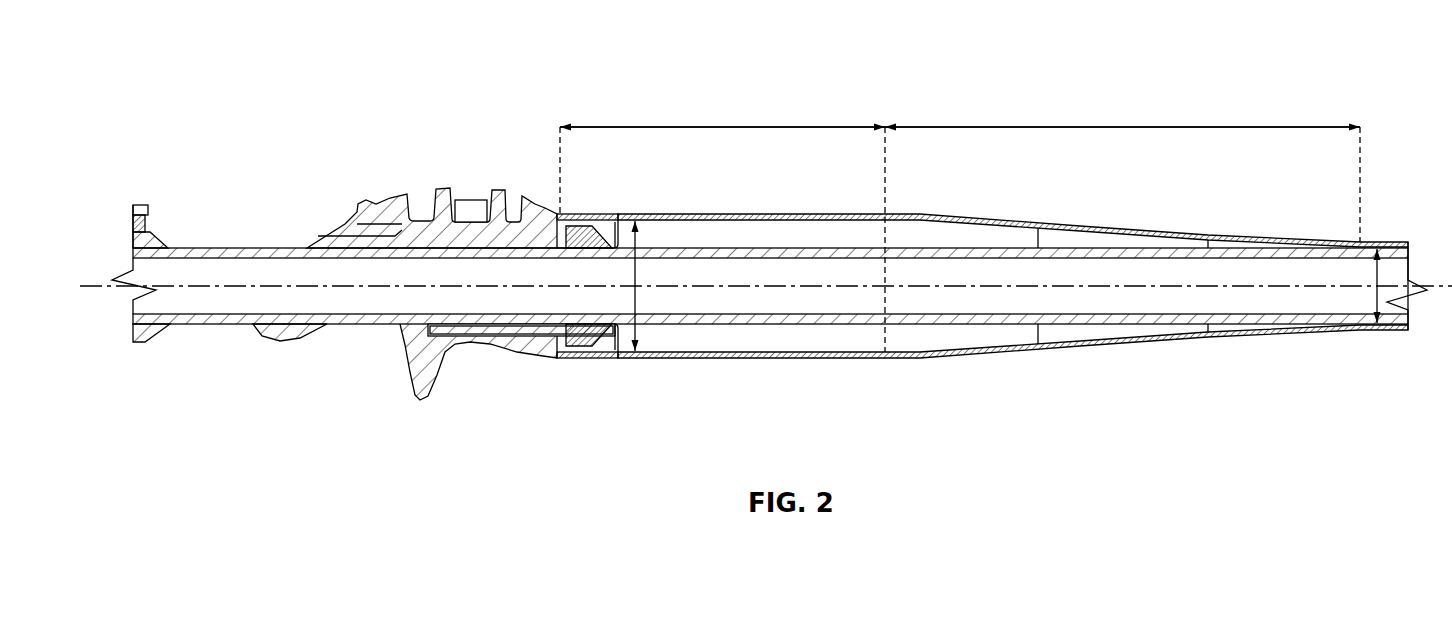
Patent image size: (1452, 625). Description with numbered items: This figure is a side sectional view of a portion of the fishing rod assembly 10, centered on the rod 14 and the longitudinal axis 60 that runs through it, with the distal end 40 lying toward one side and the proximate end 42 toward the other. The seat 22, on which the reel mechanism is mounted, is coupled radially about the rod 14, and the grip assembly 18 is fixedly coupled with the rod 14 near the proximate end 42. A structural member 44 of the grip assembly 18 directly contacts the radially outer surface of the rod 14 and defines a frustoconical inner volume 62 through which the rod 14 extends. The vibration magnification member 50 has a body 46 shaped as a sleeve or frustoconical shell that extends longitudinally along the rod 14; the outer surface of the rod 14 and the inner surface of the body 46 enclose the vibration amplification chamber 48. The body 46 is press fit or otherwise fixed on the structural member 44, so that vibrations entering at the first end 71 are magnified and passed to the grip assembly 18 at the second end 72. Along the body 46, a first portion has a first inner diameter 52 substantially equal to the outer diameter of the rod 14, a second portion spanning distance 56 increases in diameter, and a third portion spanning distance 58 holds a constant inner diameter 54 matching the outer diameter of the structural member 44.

The fishing rod assembly 10 is at (915, 40).
The rod 14 is at (368, 324).
The grip assembly 18 is at (404, 150).
The seat 22 is at (158, 233).
The distal end 40 is at (105, 343).
The proximate end 42 is at (1432, 329).
The structural member 44 is at (590, 342).
The body 46 is at (753, 358).
The vibration amplification chamber 48 is at (848, 350).
The vibration magnification member 50 is at (887, 377).
The first inner diameter 52 is at (1372, 312).
The inner diameter 54 is at (638, 240).
The distance 56 is at (1003, 127).
The distance 58 is at (765, 127).
The axis 60 is at (87, 282).
The inner volume 62 is at (618, 338).
The first end 71 is at (1370, 357).
The second end 72 is at (597, 413).